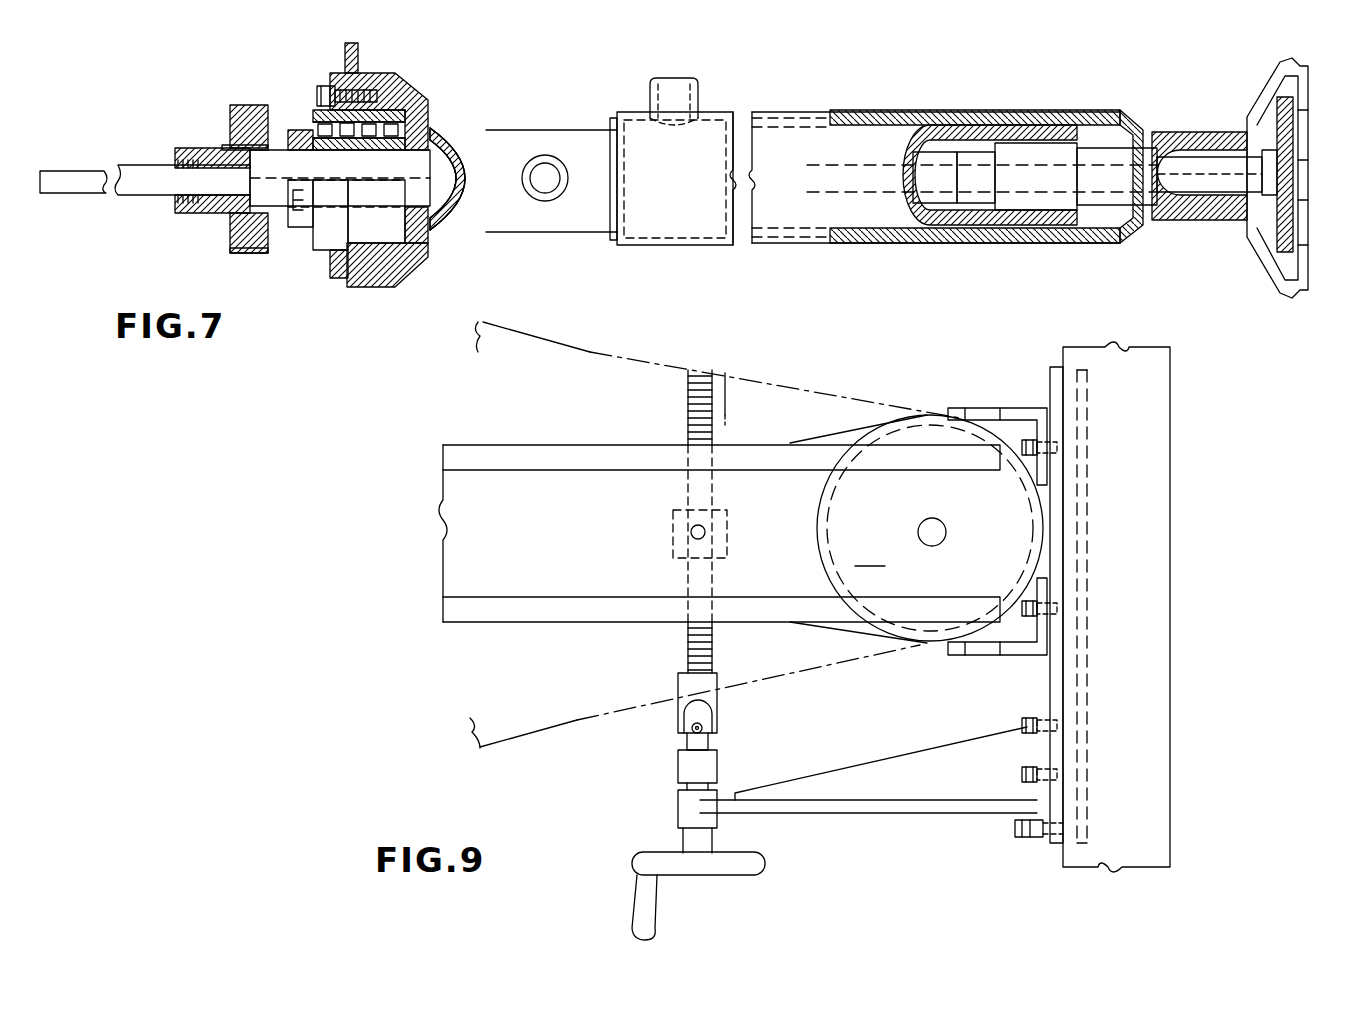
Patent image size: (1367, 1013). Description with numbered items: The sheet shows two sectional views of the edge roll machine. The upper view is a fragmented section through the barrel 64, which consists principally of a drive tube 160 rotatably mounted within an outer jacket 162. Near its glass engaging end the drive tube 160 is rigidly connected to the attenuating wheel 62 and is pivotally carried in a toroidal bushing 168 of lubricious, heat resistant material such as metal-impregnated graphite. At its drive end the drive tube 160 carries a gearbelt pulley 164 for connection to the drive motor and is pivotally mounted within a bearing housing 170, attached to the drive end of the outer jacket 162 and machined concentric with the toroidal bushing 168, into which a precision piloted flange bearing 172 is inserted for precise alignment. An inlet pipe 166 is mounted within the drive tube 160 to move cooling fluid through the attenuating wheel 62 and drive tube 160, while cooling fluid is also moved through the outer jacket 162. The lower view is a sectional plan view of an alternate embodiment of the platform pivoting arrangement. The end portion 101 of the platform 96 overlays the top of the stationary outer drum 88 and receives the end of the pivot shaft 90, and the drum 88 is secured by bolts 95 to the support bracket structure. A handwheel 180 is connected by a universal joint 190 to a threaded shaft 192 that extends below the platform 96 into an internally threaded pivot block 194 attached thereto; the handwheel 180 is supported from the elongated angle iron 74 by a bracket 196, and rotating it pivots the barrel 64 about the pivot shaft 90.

In FIG. 7, the attenuating wheel 62 is at (1290, 66).
In FIG. 7, the barrel 64 is at (1005, 53).
In FIG. 9, the elongated angle iron 74 is at (1058, 840).
In FIG. 9, the stationary outer drum 88 is at (920, 640).
In FIG. 9, the pivot shaft 90 is at (944, 526).
In FIG. 9, the bolts 95 is at (1060, 447).
In FIG. 9, the platform 96 is at (583, 610).
In FIG. 9, the end portion 101 is at (875, 554).
In FIG. 7, the drive tube 160 is at (197, 150).
In FIG. 7, the outer jacket 162 is at (972, 110).
In FIG. 7, the gearbelt pulley 164 is at (248, 112).
In FIG. 7, the inlet pipe 166 is at (100, 178).
In FIG. 7, the toroidal bushing 168 is at (1025, 200).
In FIG. 7, the bearing housing 170 is at (405, 98).
In FIG. 7, the flange bearing 172 is at (425, 112).
In FIG. 9, the handwheel 180 is at (675, 868).
In FIG. 9, the universal joint 190 is at (705, 728).
In FIG. 9, the threaded shaft 192 is at (690, 640).
In FIG. 9, the pivot block 194 is at (730, 527).
In FIG. 9, the bracket 196 is at (893, 806).